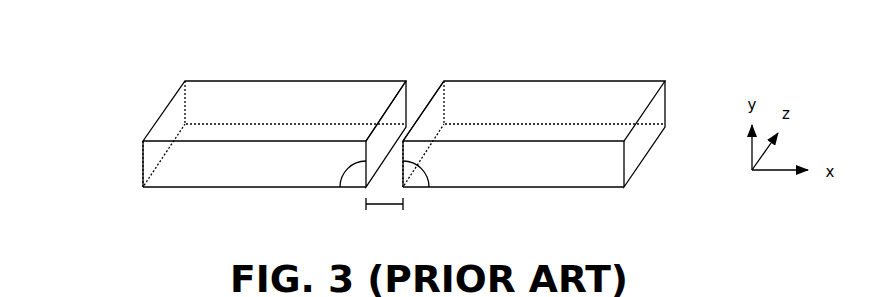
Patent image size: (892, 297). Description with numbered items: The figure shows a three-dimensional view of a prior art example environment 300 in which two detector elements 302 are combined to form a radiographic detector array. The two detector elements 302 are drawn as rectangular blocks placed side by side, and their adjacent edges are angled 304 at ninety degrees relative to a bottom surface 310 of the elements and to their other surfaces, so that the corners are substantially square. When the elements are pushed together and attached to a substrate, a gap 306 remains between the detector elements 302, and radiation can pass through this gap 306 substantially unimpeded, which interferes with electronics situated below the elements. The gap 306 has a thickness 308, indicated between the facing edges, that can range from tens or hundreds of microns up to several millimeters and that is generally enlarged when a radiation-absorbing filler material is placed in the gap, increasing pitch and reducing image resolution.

The example environment 300 is at (138, 50).
The detector elements 302 is at (295, 81).
The angled edges 304 is at (155, 123).
The gap 306 is at (415, 82).
The thickness 308 is at (387, 204).
The bottom surface 310 is at (243, 205).